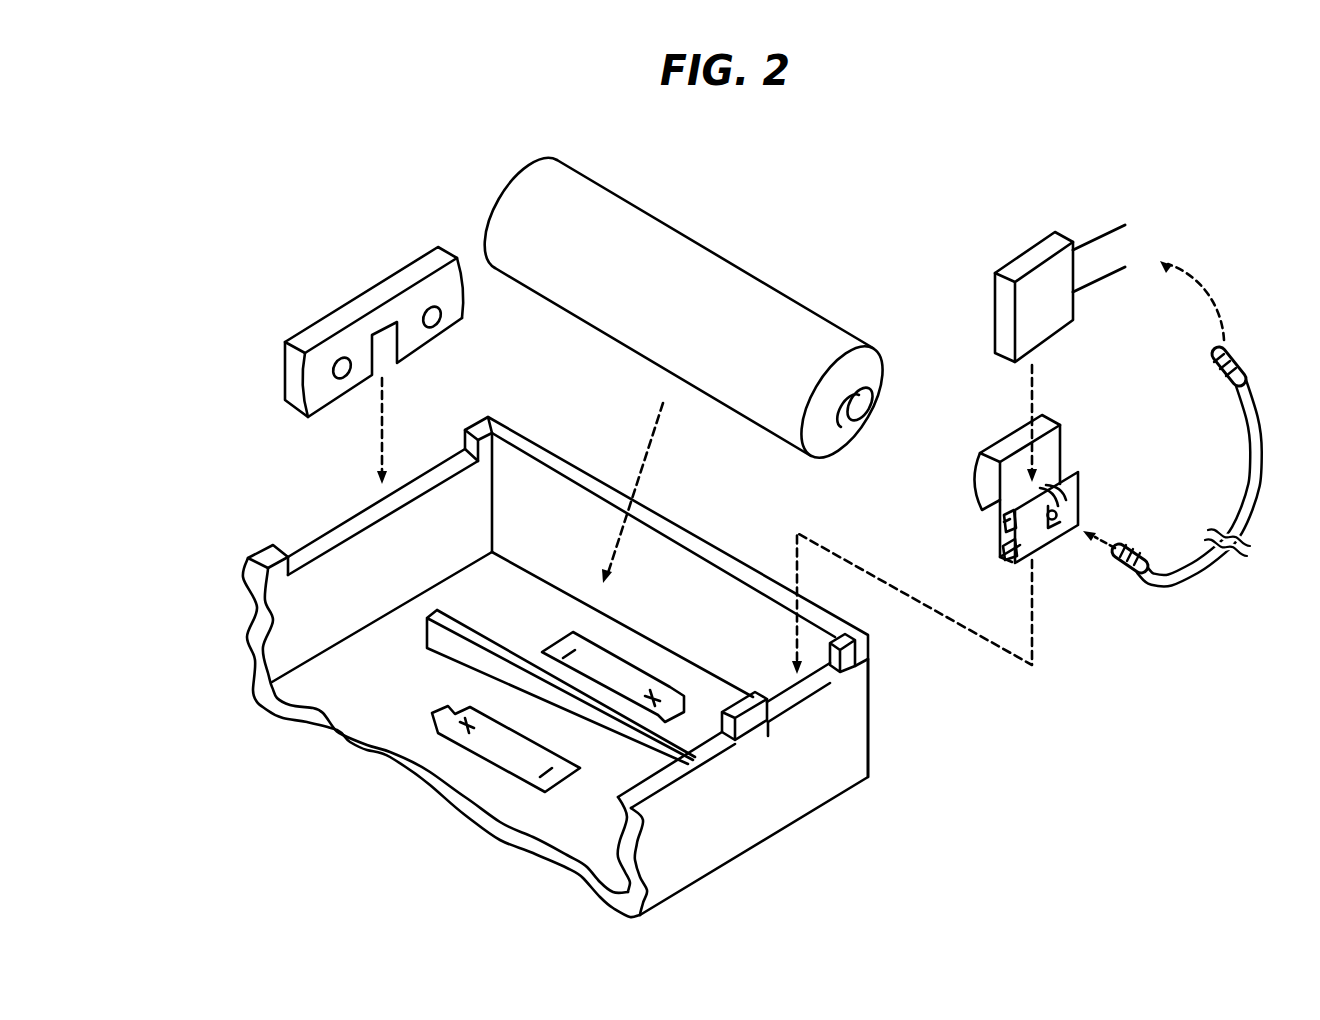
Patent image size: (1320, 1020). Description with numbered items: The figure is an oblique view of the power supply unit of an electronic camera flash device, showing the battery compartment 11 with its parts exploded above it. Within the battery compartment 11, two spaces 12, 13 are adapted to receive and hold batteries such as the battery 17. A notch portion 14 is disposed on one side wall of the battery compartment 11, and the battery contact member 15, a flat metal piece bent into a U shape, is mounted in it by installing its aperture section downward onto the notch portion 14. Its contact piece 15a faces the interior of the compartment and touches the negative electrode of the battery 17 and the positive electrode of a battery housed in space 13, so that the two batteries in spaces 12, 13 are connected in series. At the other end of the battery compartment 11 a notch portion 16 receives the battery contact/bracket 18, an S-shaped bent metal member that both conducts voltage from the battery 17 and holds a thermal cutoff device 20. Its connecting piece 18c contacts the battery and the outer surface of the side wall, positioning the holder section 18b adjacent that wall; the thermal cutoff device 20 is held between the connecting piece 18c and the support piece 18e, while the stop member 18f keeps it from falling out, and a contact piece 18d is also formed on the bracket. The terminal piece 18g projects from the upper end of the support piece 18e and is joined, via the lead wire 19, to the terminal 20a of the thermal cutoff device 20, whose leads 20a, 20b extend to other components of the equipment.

The battery compartment 11 is at (803, 824).
The space 12 is at (488, 581).
The space 13 is at (390, 682).
The notch portion 14 is at (339, 530).
The battery contact member 15 is at (328, 295).
The contact piece 15a is at (450, 317).
The notch portion 16 is at (803, 690).
The battery 17 is at (705, 267).
The battery contact/bracket 18 is at (1075, 433).
The holder section 18b is at (1015, 553).
The connecting piece 18c is at (1000, 525).
The contact piece 18d is at (980, 479).
The support piece 18e is at (1040, 538).
The stop member 18f is at (1011, 538).
The terminal piece 18g is at (1050, 512).
The lead wire 19 is at (1198, 572).
The thermal cutoff device 20 is at (1028, 268).
The terminal 20a is at (1124, 260).
The lead 20b is at (1094, 242).